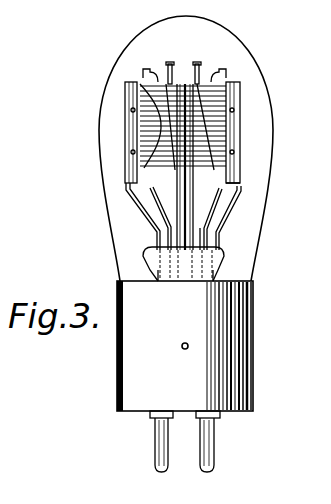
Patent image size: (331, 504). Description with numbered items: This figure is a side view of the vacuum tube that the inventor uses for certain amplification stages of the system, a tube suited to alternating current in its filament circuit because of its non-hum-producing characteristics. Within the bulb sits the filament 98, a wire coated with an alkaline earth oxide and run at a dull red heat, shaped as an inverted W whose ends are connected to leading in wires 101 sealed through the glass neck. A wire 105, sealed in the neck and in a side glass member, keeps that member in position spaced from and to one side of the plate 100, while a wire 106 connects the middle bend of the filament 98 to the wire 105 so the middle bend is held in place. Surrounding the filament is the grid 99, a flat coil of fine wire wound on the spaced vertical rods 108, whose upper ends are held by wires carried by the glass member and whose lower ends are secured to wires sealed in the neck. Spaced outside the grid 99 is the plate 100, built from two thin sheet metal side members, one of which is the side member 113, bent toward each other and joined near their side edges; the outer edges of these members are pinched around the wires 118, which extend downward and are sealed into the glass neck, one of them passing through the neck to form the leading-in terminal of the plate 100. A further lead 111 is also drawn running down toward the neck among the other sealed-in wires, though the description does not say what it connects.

The filament 98 is at (177, 80).
The grid 99 is at (234, 97).
The plate 100 is at (124, 128).
The leading in wires 101 is at (204, 228).
The wire 105 is at (222, 243).
The wire 106 is at (221, 207).
The vertical rods 108 is at (142, 74).
The lead wire 111 is at (156, 220).
The sheet metal side member 113 is at (152, 135).
The wires 118 is at (238, 187).